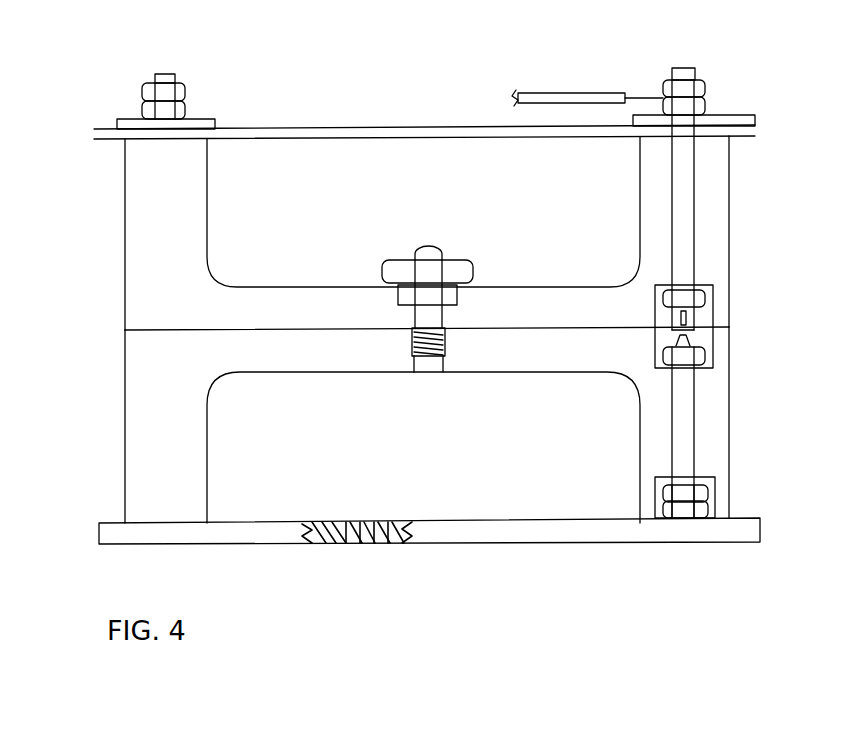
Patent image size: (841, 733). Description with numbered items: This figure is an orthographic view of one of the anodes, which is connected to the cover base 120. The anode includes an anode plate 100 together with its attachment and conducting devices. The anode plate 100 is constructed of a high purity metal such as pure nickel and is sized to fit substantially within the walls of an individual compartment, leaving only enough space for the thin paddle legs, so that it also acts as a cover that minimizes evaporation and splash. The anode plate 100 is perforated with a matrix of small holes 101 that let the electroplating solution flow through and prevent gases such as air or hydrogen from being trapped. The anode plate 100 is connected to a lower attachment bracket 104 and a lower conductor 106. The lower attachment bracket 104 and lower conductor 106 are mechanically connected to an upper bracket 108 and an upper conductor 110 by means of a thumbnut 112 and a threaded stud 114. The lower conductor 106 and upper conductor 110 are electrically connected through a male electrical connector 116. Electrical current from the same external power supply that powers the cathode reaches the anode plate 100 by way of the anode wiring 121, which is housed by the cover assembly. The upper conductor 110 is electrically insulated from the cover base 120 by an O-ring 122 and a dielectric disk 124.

The anode plate 100 is at (511, 545).
The small holes 101 is at (389, 521).
The lower attachment bracket 104 is at (713, 448).
The lower conductor 106 is at (683, 403).
The upper bracket 108 is at (715, 223).
The upper conductor 110 is at (685, 183).
The thumbnut 112 is at (470, 270).
The threaded stud 114 is at (439, 248).
The male electrical connector 116 is at (688, 323).
The cover base 120 is at (272, 131).
The anode wiring 121 is at (556, 93).
The O-ring 122 is at (703, 121).
The dielectric disk 124 is at (712, 122).